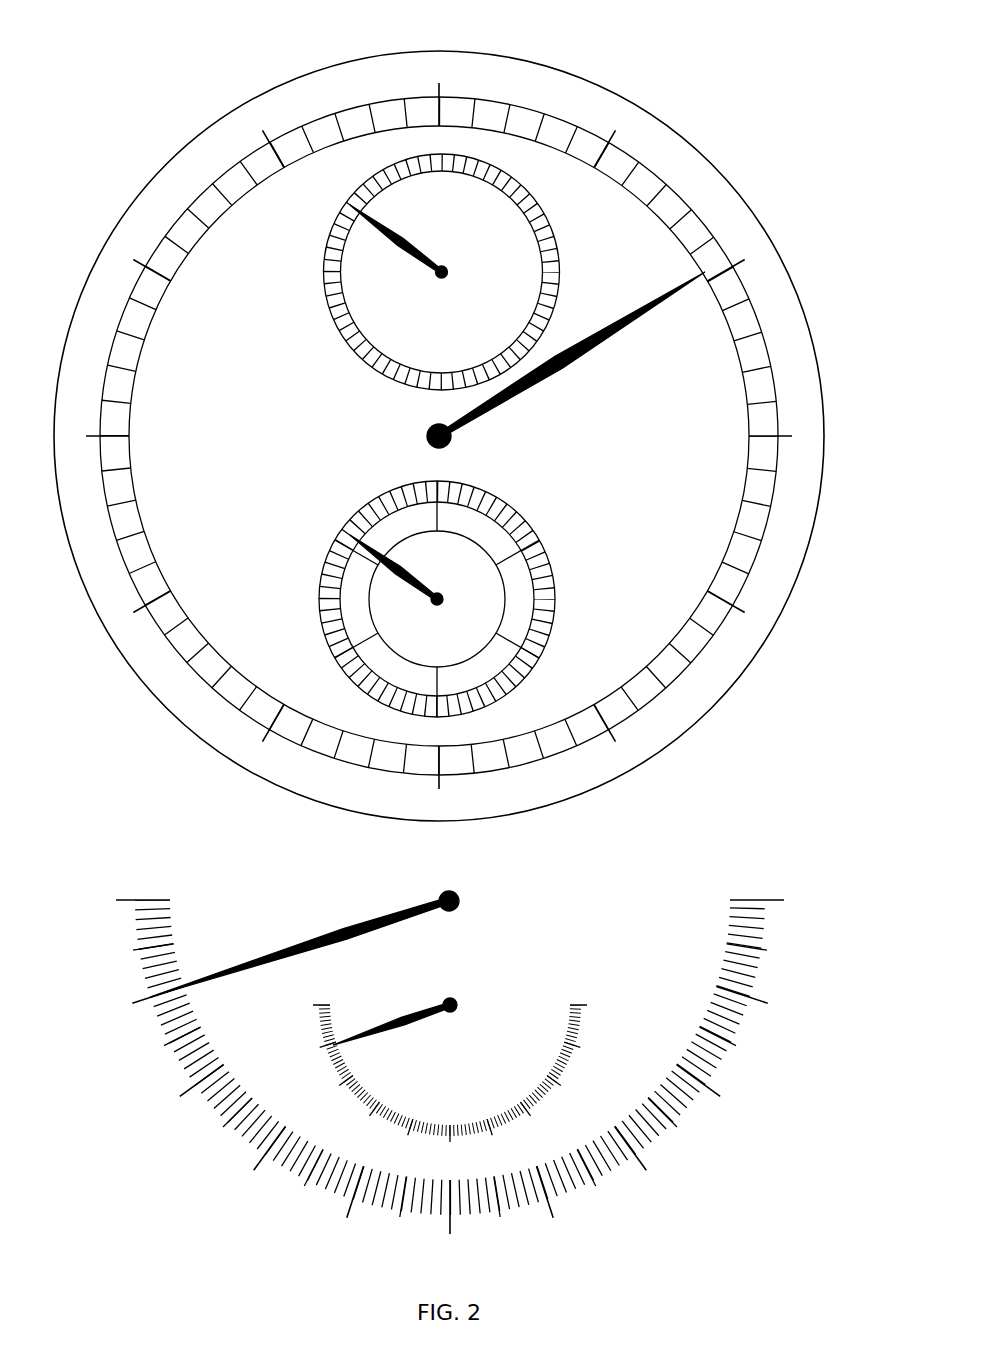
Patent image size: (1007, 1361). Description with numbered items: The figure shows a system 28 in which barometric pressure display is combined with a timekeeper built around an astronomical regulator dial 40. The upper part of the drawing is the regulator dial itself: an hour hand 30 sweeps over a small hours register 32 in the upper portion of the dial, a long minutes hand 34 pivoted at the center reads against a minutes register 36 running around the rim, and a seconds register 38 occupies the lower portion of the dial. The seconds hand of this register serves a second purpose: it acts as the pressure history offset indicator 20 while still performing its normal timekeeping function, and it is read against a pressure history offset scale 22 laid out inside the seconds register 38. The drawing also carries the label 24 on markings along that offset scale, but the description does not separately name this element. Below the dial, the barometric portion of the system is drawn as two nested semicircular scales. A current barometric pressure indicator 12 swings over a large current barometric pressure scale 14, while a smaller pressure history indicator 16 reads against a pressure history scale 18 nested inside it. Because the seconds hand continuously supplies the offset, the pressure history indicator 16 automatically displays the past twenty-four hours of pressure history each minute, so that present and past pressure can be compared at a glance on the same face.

The system 28 is at (181, 64).
The astronomical regulator dial 40 is at (657, 117).
The minutes register 36 is at (774, 500).
The minutes hand 34 is at (627, 327).
The hours register 32 is at (323, 293).
The hour hand 30 is at (412, 240).
The seconds register 38 is at (553, 568).
The scale markers 24 is at (365, 525).
The pressure history offset scale 22 is at (503, 657).
The pressure history offset indicator 20 is at (377, 575).
The current barometric pressure scale 14 is at (717, 1088).
The current barometric pressure indicator 12 is at (288, 948).
The pressure history scale 18 is at (578, 1003).
The pressure history indicator 16 is at (410, 1023).